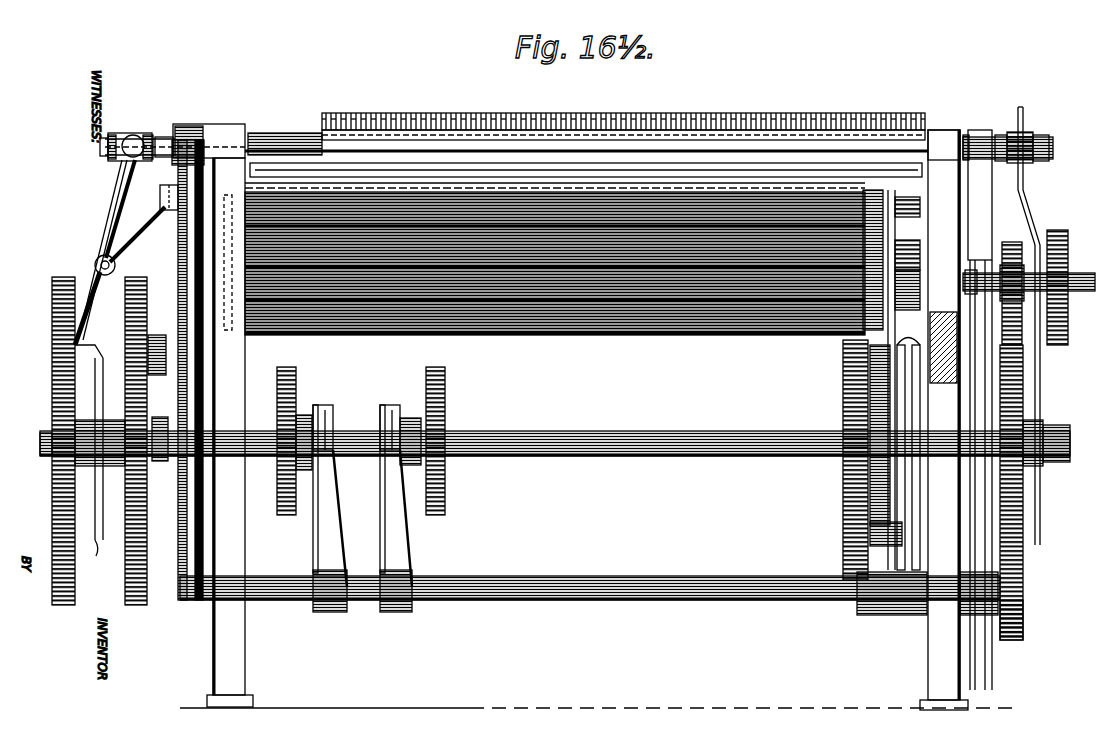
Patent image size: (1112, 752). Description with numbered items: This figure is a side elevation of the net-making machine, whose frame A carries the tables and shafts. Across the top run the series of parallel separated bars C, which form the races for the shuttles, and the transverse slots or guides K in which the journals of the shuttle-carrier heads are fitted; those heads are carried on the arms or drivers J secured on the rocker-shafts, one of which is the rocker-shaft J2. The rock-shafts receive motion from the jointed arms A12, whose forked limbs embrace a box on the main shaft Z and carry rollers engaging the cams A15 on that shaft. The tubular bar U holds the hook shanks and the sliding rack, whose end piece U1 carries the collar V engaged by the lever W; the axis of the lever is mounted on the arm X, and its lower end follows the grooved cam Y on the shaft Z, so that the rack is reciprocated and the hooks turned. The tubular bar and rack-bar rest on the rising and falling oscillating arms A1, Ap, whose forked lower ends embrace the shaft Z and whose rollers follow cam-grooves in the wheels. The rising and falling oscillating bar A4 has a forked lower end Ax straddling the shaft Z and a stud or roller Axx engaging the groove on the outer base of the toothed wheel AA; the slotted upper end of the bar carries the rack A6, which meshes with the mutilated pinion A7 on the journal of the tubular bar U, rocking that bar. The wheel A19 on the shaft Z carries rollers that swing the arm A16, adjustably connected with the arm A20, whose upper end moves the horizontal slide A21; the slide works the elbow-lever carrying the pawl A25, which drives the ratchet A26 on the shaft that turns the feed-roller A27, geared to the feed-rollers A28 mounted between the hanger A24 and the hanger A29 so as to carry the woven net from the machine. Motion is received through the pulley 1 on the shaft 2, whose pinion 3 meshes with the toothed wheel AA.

The parallel separated bars C is at (623, 115).
The slots or guides K is at (528, 133).
The feed-rollers A28 is at (583, 262).
The feed-roller A27 is at (555, 263).
The pawl A25 is at (909, 379).
The ratchet A26 is at (920, 266).
The horizontal slide A21 is at (940, 312).
The hanger A29 is at (236, 340).
The frame A is at (263, 359).
The arm A20 is at (920, 492).
The shaft Z is at (597, 440).
The rocker-shaft J2 is at (667, 580).
The cam Y is at (109, 441).
The collar V is at (130, 135).
The tubular bar U is at (165, 136).
The end piece U1 is at (105, 135).
The lever W is at (112, 208).
The arm X is at (125, 258).
The rising and falling oscillating arms A1 is at (175, 240).
The arms or drivers J is at (183, 280).
The cams A15 is at (452, 386).
The jointed arms A12 is at (314, 536).
The hanger A24 is at (845, 342).
The wheel A19 is at (848, 372).
The arm A16 is at (880, 440).
The rack A6 is at (1024, 118).
The mutilated pinion A7 is at (1036, 136).
The rising and falling oscillating arms Ap is at (984, 218).
The pinion 3 is at (1024, 247).
The shaft 2 is at (1086, 282).
The pulley 1 is at (1070, 245).
The rising and falling oscillating bar A4 is at (1030, 220).
The stud or roller Axx is at (1040, 358).
The forked lower end Ax is at (1038, 535).
The toothed wheel AA is at (1024, 587).